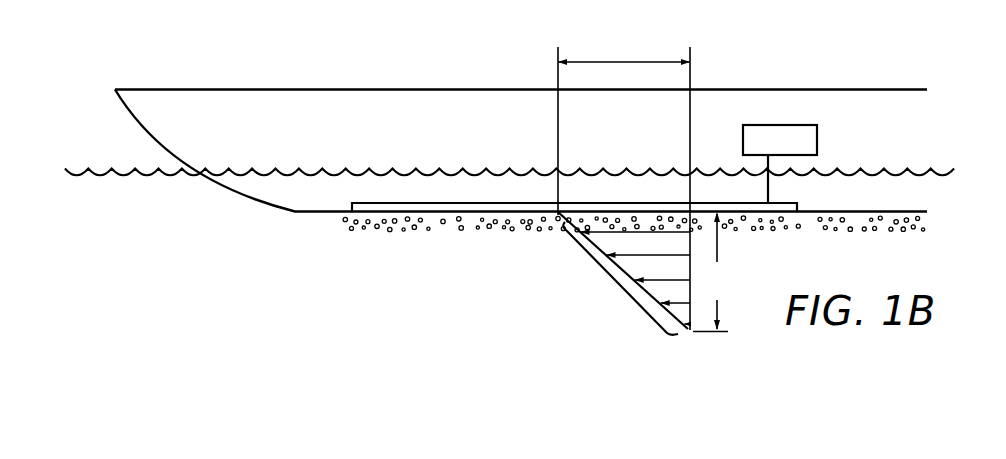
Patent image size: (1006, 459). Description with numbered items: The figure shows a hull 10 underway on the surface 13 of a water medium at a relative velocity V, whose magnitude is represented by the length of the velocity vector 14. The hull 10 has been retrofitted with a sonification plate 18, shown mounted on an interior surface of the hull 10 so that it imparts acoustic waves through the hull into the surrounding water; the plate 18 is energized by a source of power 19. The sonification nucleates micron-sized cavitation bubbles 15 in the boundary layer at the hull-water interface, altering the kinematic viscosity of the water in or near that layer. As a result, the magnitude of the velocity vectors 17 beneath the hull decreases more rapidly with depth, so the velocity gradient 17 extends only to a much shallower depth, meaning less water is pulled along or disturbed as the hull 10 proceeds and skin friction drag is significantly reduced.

The hull 10 is at (248, 88).
The surface of water medium 13 is at (130, 172).
The velocity vector 14 is at (667, 62).
The cavitation bubbles 15 is at (408, 237).
The velocity vectors 17 is at (618, 289).
The sonification plate 18 is at (363, 202).
The source of power 19 is at (818, 132).